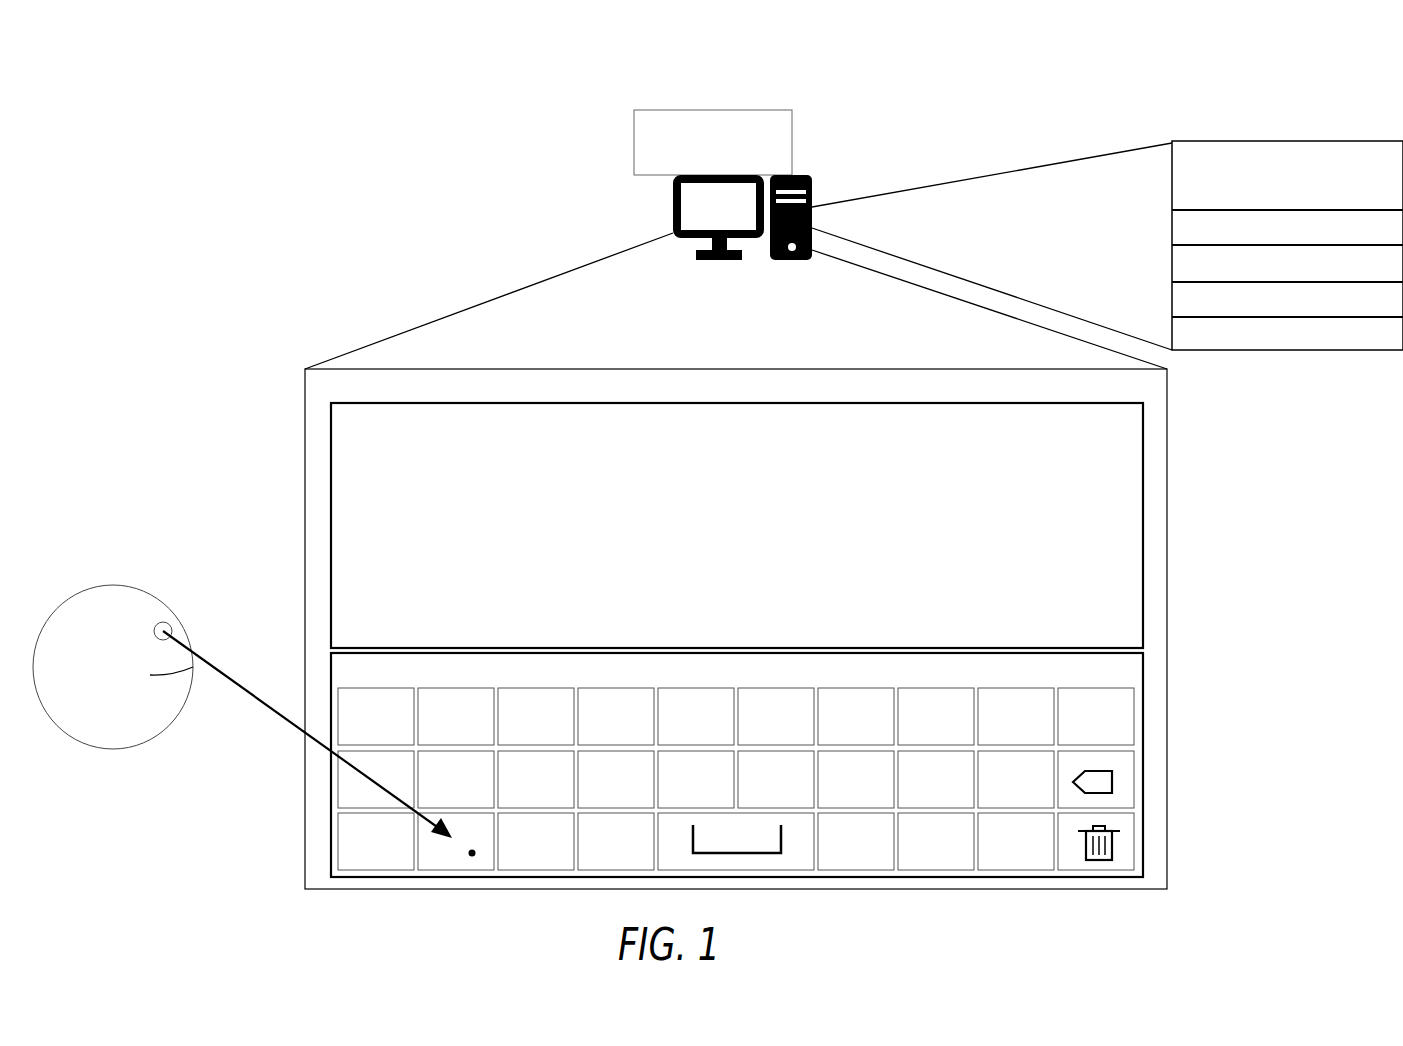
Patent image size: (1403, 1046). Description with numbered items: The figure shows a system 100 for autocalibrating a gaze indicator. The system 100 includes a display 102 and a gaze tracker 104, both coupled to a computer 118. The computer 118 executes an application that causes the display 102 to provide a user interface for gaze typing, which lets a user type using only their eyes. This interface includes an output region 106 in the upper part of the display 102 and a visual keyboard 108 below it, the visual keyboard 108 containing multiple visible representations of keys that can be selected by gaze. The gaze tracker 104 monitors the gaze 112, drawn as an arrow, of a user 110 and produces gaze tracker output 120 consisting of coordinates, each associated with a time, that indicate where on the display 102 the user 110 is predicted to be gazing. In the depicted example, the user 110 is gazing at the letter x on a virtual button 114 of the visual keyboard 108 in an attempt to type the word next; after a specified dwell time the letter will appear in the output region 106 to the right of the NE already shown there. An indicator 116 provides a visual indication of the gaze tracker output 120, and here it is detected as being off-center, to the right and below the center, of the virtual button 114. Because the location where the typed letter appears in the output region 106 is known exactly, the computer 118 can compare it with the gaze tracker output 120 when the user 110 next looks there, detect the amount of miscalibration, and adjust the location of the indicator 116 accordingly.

The system 100 is at (106, 104).
The display 102 is at (955, 376).
The gaze tracker 104 is at (789, 138).
The output region 106 is at (1007, 407).
The visual keyboard 108 is at (353, 657).
The user 110 is at (158, 598).
The gaze 112 is at (212, 664).
The virtual button 114 is at (468, 815).
The indicator 116 is at (472, 852).
The computer 118 is at (807, 175).
The gaze tracker output 120 is at (1174, 195).